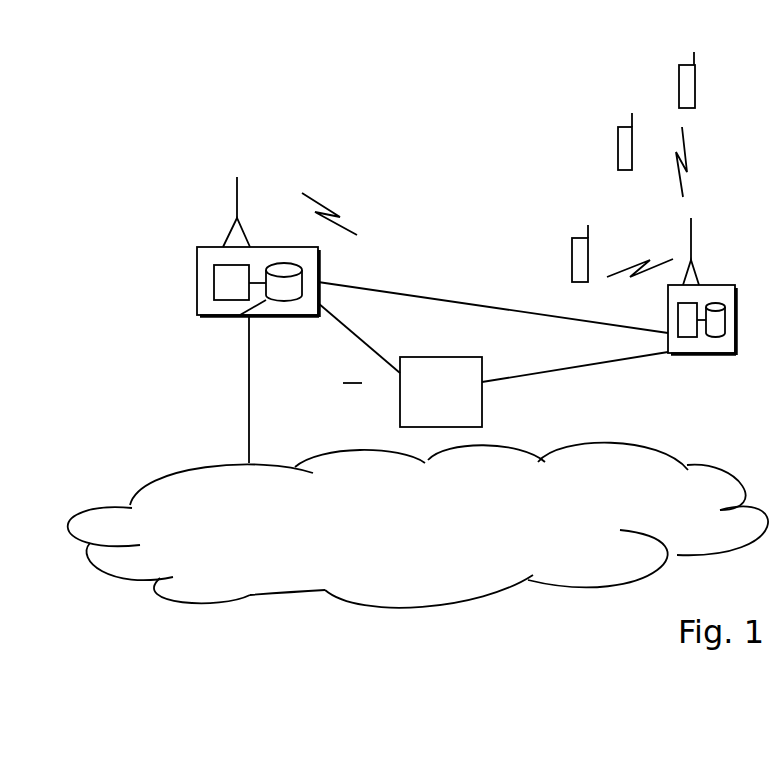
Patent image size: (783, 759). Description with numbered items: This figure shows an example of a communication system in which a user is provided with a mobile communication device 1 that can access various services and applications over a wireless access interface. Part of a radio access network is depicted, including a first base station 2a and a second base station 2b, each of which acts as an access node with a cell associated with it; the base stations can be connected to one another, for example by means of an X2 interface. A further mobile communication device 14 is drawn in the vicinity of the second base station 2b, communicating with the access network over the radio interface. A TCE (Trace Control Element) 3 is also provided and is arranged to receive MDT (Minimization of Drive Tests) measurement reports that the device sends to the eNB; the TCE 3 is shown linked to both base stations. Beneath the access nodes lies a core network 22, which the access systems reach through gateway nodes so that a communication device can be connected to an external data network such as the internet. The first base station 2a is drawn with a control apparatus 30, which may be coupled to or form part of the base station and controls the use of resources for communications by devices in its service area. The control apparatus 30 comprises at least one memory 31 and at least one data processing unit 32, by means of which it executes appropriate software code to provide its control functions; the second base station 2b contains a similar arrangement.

The mobile communication device 1 is at (683, 95).
The mobile terminal 14 is at (538, 212).
The first base station 2a is at (148, 193).
The second base station 2b is at (722, 345).
The TCE (Trace Control Element) 3 is at (441, 392).
The control apparatus 30 is at (197, 248).
The memory 31 is at (240, 316).
The data processing unit 32 is at (212, 289).
The core network 22 is at (153, 475).